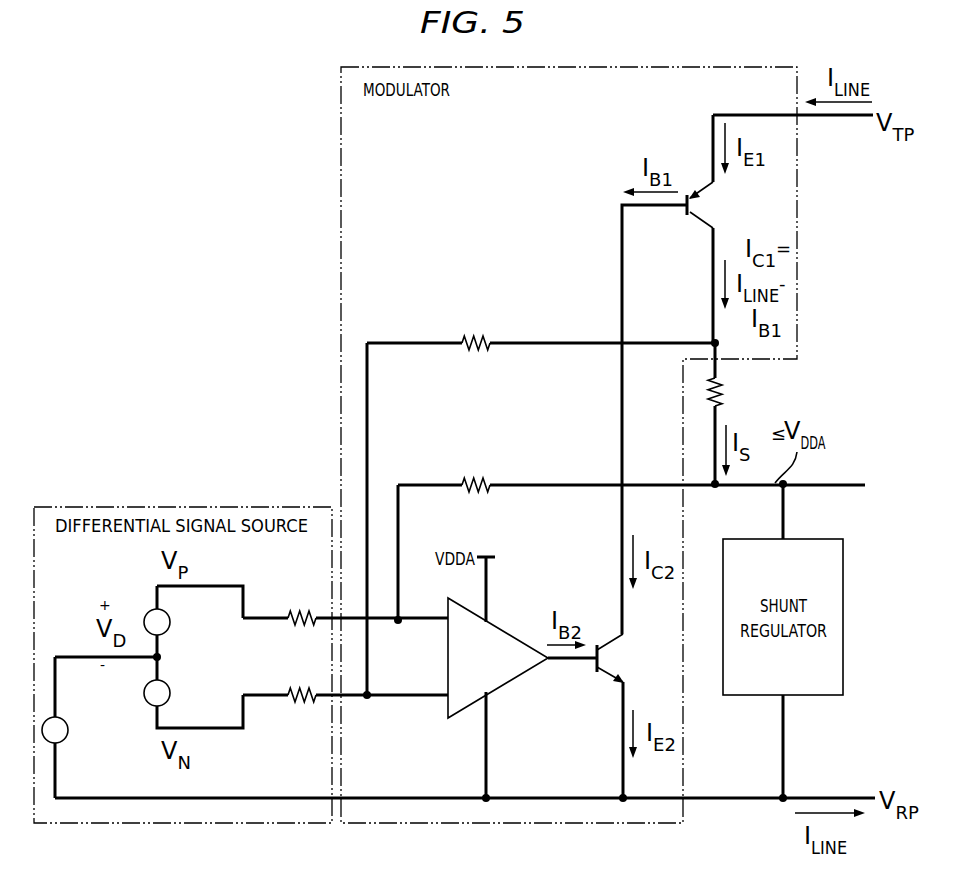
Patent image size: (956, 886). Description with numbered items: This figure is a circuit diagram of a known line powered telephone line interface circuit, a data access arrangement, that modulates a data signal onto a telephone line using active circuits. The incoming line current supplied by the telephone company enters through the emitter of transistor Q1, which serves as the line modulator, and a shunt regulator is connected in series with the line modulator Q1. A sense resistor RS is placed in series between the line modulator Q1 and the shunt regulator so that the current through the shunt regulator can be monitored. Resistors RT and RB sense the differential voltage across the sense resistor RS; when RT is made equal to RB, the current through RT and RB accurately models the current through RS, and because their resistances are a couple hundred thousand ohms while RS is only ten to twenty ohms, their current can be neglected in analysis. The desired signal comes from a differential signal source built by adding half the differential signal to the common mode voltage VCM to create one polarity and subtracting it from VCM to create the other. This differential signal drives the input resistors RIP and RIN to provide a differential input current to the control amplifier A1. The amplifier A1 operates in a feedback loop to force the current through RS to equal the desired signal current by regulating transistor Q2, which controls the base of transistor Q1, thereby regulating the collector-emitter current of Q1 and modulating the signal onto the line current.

The transistor Q1 is at (713, 205).
The transistor Q2 is at (623, 658).
The control amplifier A1 is at (498, 658).
The resistor RT is at (478, 322).
The resistor RB is at (480, 507).
The sense resistor RS is at (731, 393).
The input resistor RIP is at (302, 600).
The input resistor RIN is at (303, 718).
The common mode voltage VCM is at (81, 733).